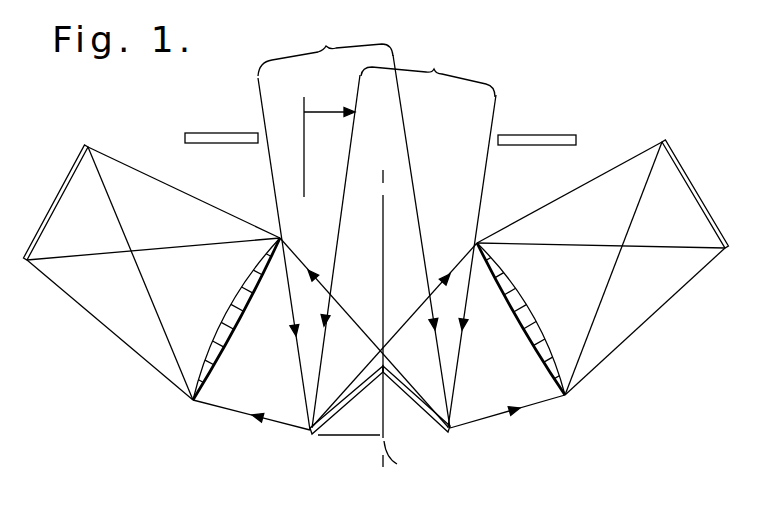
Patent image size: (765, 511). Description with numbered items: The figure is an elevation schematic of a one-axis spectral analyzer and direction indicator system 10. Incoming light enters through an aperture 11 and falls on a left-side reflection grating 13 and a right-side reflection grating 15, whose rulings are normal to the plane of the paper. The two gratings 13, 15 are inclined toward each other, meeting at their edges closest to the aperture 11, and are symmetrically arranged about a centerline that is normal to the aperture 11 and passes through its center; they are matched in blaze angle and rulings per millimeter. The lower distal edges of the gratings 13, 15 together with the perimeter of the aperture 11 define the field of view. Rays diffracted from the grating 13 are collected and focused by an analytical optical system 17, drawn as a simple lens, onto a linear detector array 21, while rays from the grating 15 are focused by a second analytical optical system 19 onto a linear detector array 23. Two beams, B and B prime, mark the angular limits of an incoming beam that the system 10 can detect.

The one-axis spectral analyzer system 10 is at (590, 453).
The aperture 11 is at (478, 114).
The left-side reflection grating 13 is at (313, 433).
The right-side reflection grating 15 is at (449, 431).
The analytical optical system 17 is at (190, 404).
The analytical optical system 19 is at (565, 398).
The linear detector array 21 is at (57, 195).
The linear detector array 23 is at (680, 162).